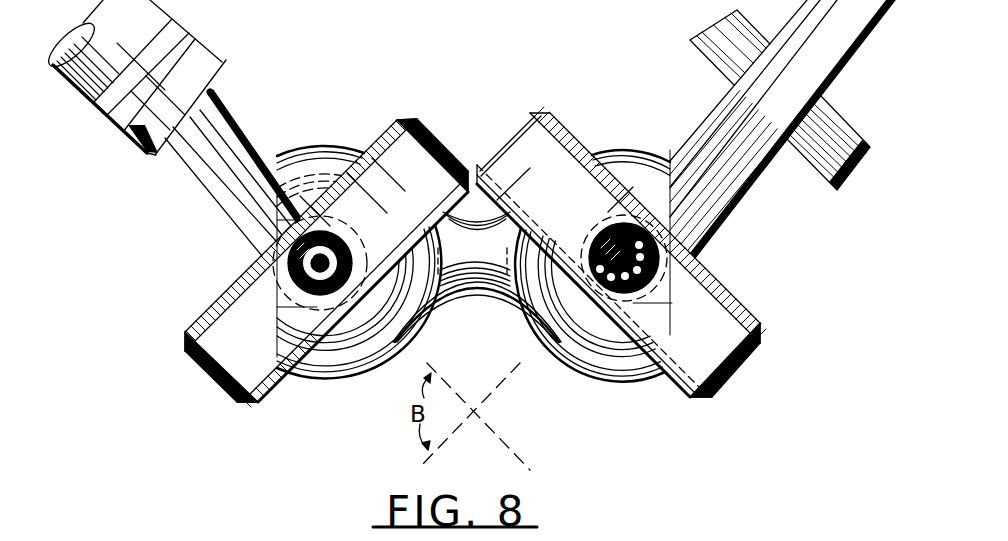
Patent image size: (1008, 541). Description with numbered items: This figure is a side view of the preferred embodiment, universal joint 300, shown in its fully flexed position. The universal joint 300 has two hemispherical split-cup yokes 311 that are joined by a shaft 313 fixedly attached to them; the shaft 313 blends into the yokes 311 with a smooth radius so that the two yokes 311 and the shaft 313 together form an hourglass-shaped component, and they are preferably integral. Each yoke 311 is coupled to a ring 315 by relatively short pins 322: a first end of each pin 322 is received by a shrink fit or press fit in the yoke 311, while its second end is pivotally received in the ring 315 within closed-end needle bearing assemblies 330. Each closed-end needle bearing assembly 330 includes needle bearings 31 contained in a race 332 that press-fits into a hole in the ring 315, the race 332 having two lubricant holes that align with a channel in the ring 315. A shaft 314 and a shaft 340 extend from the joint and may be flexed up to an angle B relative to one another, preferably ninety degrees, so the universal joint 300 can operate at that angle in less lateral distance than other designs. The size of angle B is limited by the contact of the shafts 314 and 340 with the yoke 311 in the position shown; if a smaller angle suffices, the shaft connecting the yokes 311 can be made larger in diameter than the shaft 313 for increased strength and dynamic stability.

The universal joint 300 is at (503, 64).
The hemispherical split-cup yoke 311 is at (318, 148).
The shaft 313 is at (465, 298).
The shaft 314 is at (221, 62).
The ring 315 is at (527, 116).
The short pin 322 is at (660, 262).
The closed-end needle bearing assembly 330 is at (262, 252).
The race 332 is at (668, 256).
The needle bearing 31 is at (662, 279).
The shaft 340 is at (848, 78).